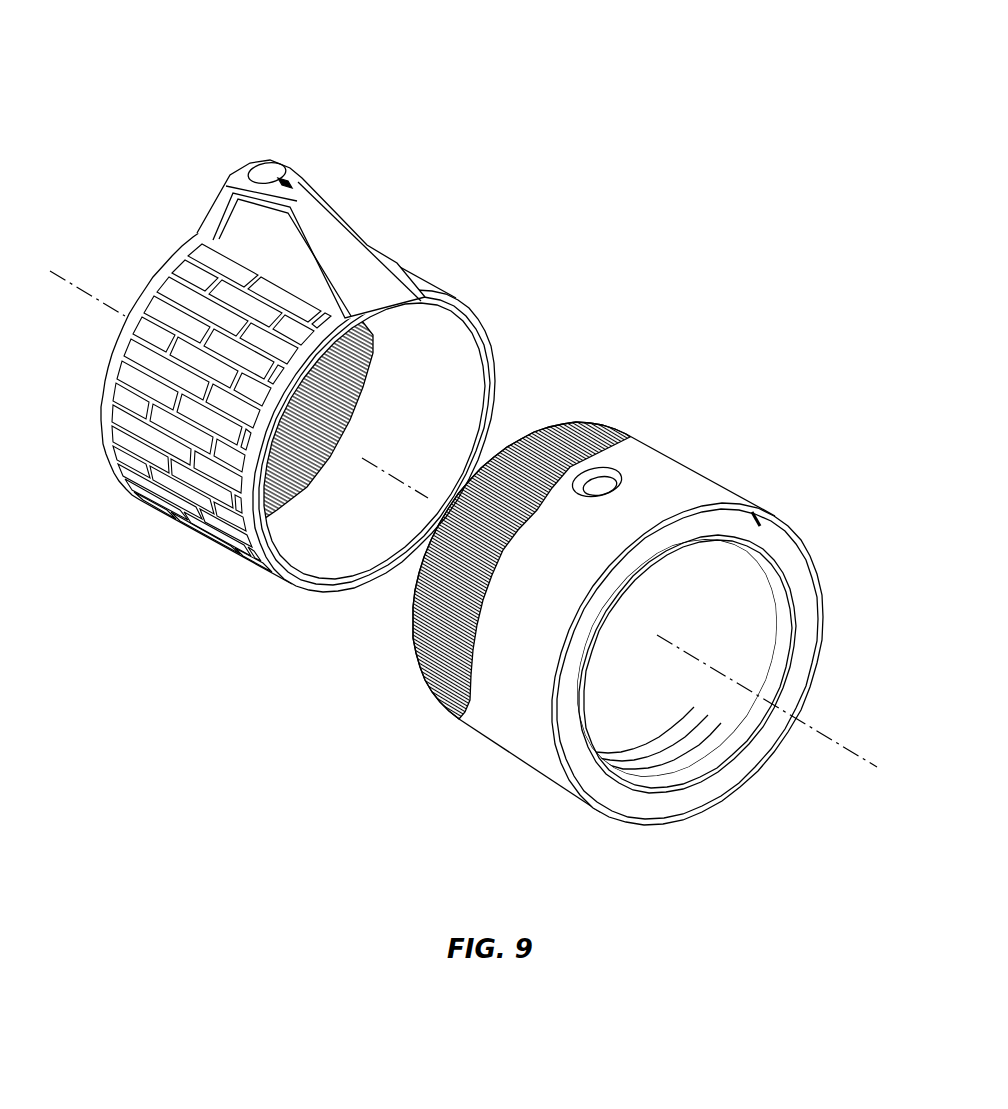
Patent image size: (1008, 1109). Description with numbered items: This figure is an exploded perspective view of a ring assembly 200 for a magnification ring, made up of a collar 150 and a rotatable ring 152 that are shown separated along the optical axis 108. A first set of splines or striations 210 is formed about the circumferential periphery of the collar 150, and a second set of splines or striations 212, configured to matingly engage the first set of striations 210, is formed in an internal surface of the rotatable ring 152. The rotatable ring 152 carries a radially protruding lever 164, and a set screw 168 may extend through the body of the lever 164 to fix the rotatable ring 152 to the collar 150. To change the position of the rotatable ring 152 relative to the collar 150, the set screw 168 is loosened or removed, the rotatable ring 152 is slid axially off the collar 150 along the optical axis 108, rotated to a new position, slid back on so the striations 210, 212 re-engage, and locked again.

The ring assembly 200 is at (627, 255).
The rotatable ring 152 is at (397, 262).
The second set of striations 212 is at (363, 407).
The set screw 168 is at (267, 170).
The lever 164 is at (293, 175).
The collar 150 is at (512, 750).
The first set of striations 210 is at (617, 433).
The optical axis 108 is at (817, 727).